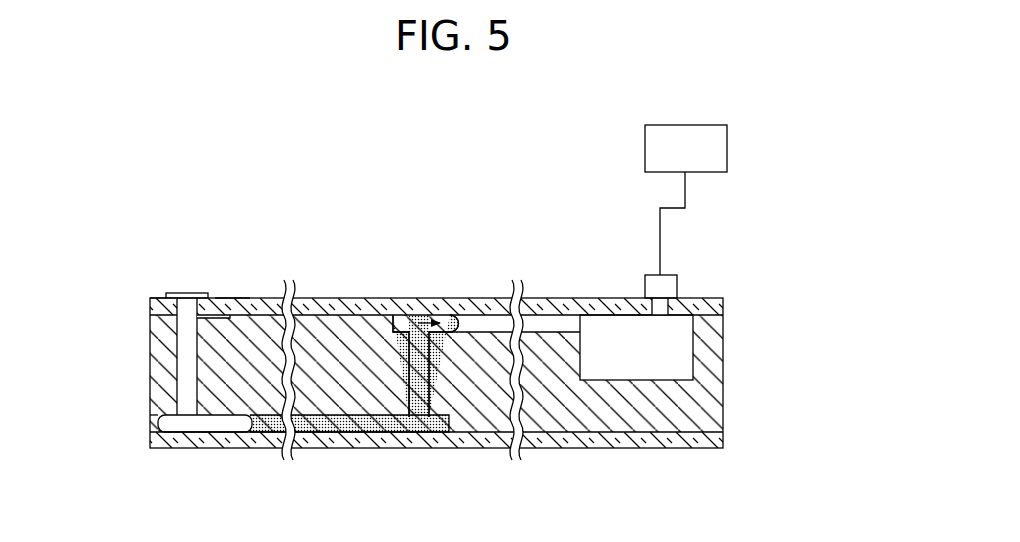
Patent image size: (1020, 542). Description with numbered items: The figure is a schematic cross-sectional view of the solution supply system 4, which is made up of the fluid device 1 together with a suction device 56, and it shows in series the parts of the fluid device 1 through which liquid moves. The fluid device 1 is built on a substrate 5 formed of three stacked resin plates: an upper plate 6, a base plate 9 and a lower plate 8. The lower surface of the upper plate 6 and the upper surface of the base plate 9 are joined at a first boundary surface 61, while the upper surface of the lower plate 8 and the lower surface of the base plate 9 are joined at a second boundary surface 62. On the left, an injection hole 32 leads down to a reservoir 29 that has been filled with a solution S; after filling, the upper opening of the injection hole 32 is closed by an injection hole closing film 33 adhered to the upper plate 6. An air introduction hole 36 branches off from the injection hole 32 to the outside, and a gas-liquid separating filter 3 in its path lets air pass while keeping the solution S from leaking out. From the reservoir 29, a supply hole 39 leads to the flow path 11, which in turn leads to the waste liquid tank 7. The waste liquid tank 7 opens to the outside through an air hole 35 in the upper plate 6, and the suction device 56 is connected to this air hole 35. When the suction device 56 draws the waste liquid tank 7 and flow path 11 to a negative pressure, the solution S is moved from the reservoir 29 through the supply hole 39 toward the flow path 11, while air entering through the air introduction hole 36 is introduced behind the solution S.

The fluid device 1 is at (449, 273).
The gas-liquid separating filter 3 is at (230, 314).
The solution supply system 4 is at (673, 159).
The substrate 5 is at (493, 378).
The upper plate 6 is at (715, 304).
The waste liquid tank 7 is at (616, 340).
The lower plate 8 is at (469, 447).
The base plate 9 is at (710, 378).
The flow path 11 is at (550, 318).
The reservoir 29 is at (229, 428).
The injection hole 32 is at (174, 371).
The injection hole closing film 33 is at (178, 292).
The air hole 35 is at (657, 300).
The air introduction hole 36 is at (236, 296).
The supply hole 39 is at (413, 336).
The suction device 56 is at (645, 150).
The first boundary surface 61 is at (162, 309).
The second boundary surface 62 is at (155, 422).
The solution S is at (262, 434).